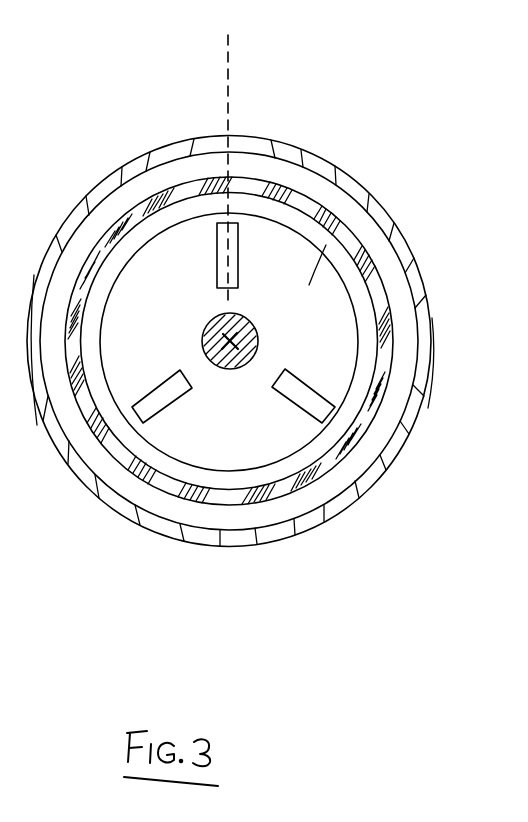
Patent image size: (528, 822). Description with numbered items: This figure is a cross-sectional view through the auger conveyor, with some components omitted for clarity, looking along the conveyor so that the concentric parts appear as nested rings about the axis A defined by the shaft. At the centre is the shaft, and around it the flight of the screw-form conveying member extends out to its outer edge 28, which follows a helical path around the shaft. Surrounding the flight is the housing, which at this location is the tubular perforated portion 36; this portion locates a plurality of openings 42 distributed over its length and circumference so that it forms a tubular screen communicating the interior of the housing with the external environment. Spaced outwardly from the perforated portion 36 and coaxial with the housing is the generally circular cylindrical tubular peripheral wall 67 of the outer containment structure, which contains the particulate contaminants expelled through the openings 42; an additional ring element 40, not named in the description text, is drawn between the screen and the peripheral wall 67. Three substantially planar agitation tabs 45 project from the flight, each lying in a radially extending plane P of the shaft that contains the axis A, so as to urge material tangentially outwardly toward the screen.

The tubular peripheral wall 67 is at (407, 240).
The outer ring 40 is at (382, 207).
The outer edge 28 is at (357, 232).
The openings 42 is at (308, 193).
The tubular perforated portion 36 is at (280, 178).
The agitation tab 45 is at (232, 223).
The axis A is at (281, 303).
The radially extending plane P is at (228, 83).